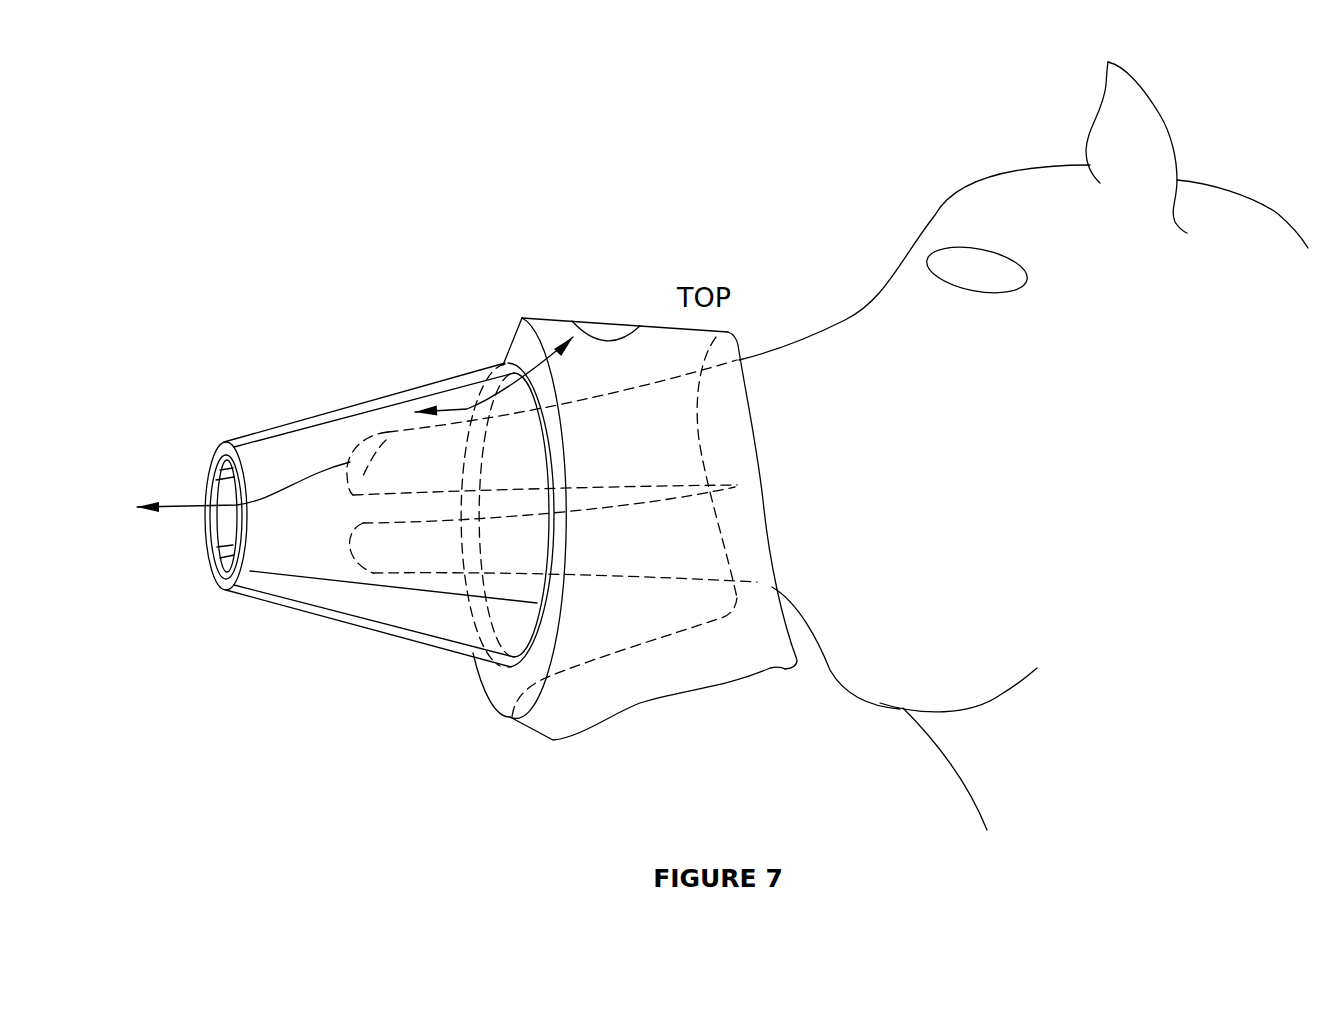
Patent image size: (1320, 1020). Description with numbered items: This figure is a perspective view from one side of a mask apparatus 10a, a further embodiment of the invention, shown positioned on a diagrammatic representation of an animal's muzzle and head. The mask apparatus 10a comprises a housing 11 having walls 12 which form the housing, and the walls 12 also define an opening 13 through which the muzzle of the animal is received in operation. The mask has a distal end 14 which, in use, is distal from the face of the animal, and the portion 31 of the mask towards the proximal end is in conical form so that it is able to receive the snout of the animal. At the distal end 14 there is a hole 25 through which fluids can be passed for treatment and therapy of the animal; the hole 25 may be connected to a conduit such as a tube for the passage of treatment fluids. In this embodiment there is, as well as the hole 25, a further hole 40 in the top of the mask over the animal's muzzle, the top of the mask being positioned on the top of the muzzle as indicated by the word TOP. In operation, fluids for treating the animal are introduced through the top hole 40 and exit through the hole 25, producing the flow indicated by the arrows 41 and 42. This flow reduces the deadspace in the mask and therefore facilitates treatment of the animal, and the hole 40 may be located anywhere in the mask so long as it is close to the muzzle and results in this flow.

The mask apparatus 10a is at (386, 365).
The housing 11 is at (457, 678).
The walls 12 is at (662, 673).
The opening 13 is at (773, 458).
The distal end 14 is at (220, 593).
The hole 25 is at (225, 532).
The conical portion 31 is at (342, 627).
The top hole 40 is at (604, 295).
The flow arrow 41 is at (458, 410).
The flow arrow 42 is at (198, 497).